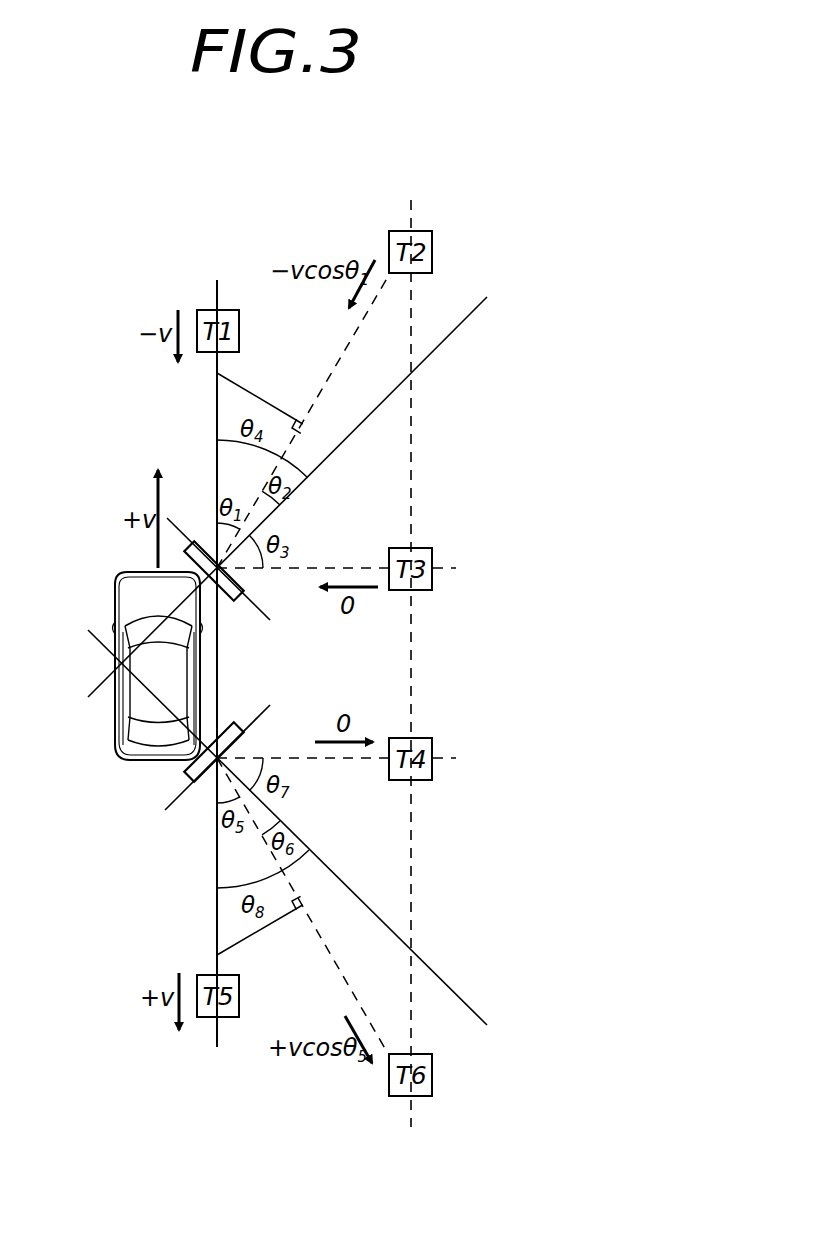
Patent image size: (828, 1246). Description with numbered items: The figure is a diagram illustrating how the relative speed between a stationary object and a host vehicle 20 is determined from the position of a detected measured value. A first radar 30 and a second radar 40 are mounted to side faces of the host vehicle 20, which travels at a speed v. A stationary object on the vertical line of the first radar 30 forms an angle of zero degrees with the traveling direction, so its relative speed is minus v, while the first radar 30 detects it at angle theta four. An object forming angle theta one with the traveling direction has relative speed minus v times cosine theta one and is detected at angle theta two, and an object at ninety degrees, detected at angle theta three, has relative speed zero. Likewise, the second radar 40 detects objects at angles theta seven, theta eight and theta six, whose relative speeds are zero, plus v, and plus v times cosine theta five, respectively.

The host vehicle 20 is at (120, 575).
The first radar 30 is at (236, 600).
The second radar 40 is at (239, 728).